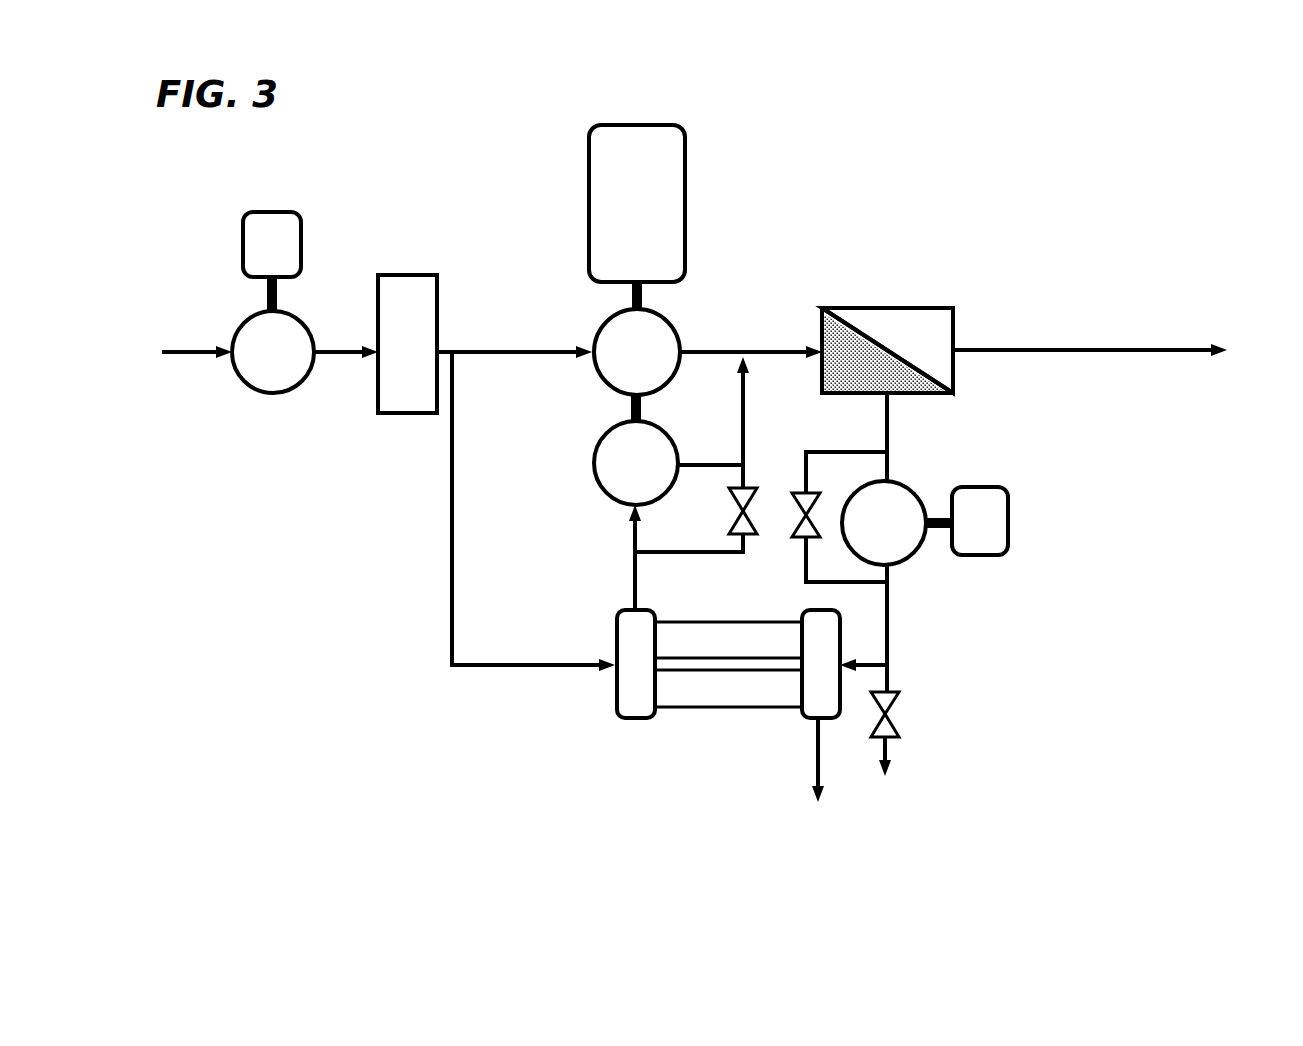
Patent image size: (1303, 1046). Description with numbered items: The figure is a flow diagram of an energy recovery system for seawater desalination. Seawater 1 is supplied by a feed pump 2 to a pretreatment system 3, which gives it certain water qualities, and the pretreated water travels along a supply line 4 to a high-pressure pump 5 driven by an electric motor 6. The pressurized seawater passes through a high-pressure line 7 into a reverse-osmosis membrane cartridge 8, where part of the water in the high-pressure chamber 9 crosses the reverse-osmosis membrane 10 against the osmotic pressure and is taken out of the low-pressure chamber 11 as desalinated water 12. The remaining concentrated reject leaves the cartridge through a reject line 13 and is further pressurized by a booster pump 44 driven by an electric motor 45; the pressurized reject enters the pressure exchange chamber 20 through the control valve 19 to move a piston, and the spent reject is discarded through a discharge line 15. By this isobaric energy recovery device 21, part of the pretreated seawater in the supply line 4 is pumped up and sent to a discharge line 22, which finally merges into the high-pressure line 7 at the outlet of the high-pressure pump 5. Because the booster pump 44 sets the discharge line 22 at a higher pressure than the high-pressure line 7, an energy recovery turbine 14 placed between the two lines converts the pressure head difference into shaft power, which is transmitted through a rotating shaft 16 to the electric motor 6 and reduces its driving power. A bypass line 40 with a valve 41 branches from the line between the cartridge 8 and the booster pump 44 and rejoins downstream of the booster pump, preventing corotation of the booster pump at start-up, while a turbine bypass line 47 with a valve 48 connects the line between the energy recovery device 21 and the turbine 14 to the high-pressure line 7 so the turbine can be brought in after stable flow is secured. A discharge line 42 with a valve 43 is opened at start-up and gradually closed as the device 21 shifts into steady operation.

The seawater 1 is at (198, 360).
The feed pump 2 is at (272, 395).
The pretreatment system 3 is at (383, 416).
The supply line 4 is at (452, 350).
The high-pressure pump 5 is at (668, 332).
The electric motor 6 is at (678, 220).
The high-pressure line 7 is at (780, 358).
The reverse-osmosis membrane cartridge 8 is at (941, 306).
The high-pressure chamber 9 is at (925, 397).
The reverse-osmosis membrane 10 is at (928, 368).
The low-pressure chamber 11 is at (930, 338).
The desalinated water 12 is at (1099, 330).
The reject line 13 is at (886, 428).
The energy recovery turbine 14 is at (668, 478).
The discharge line 15 is at (820, 785).
The rotating shaft 16 is at (646, 407).
The control valve 19 is at (826, 617).
The pressure exchange chamber 20 is at (745, 690).
The isobaric energy recovery device 21 is at (694, 710).
The discharge line 22 is at (632, 570).
The bypass line 40 is at (803, 492).
The valve 41 is at (798, 525).
The discharge line 42 is at (896, 688).
The valve 43 is at (897, 736).
The booster pump 44 is at (900, 550).
The electric motor 45 is at (985, 545).
The turbine bypass line 47 is at (676, 555).
The valve 48 is at (731, 521).